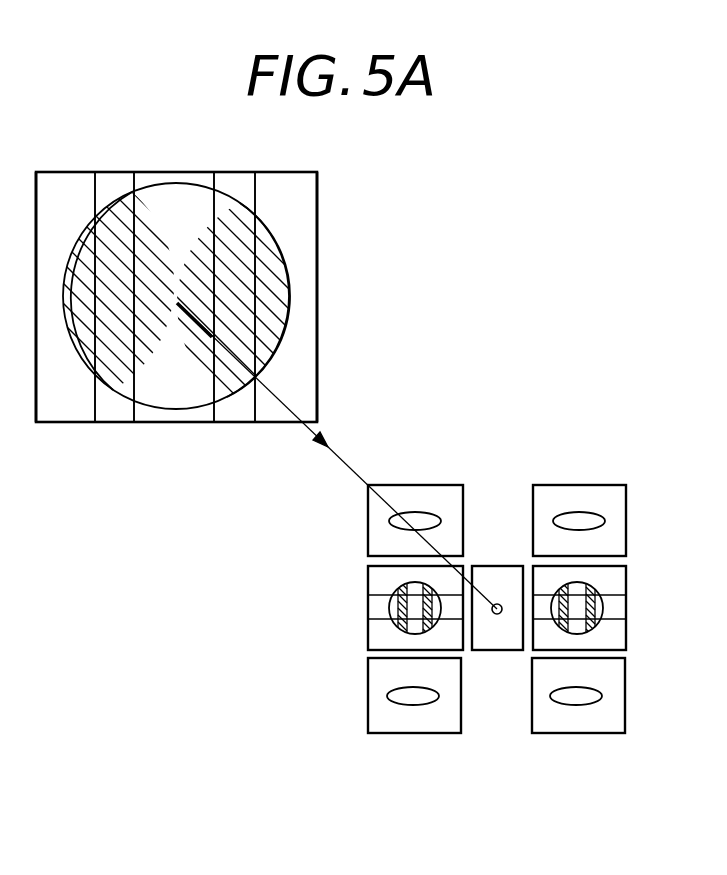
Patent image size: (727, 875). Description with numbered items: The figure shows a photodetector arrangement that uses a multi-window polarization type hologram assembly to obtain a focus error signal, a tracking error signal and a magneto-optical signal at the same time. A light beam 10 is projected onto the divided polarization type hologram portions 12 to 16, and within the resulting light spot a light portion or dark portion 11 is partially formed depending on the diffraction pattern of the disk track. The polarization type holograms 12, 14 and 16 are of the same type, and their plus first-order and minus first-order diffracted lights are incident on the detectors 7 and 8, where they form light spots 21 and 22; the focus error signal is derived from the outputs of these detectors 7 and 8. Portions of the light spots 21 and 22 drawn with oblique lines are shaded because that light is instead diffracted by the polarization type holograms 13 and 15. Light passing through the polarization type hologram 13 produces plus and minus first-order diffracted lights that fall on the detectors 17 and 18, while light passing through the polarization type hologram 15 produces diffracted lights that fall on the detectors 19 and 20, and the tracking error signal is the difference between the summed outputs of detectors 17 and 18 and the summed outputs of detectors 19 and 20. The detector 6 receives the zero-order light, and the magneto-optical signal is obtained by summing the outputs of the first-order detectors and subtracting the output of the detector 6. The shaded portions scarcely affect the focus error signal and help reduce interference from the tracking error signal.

The detector 6 is at (502, 647).
The detector 7 is at (395, 626).
The detector 8 is at (602, 596).
The light beam 10 is at (211, 296).
The light portion or dark portion 11 is at (222, 375).
The polarization type hologram 12 is at (78, 186).
The polarization type hologram 13 is at (120, 186).
The polarization type hologram 14 is at (194, 180).
The polarization type hologram 15 is at (240, 180).
The polarization type hologram 16 is at (299, 180).
The detector 17 is at (383, 728).
The detector 18 is at (607, 495).
The detector 19 is at (443, 495).
The detector 20 is at (607, 728).
The light spot 21 is at (364, 577).
The light spot 22 is at (632, 640).